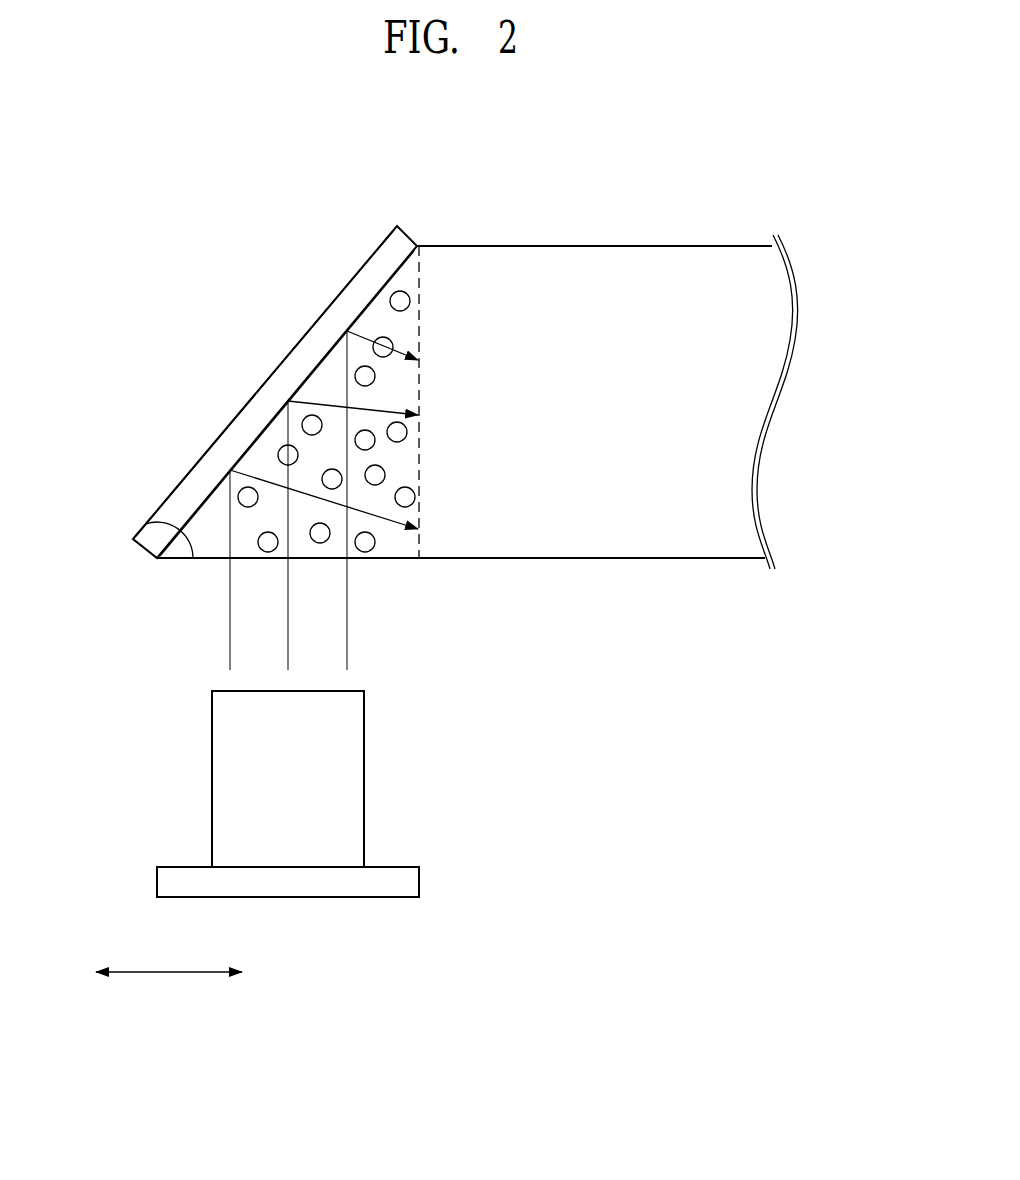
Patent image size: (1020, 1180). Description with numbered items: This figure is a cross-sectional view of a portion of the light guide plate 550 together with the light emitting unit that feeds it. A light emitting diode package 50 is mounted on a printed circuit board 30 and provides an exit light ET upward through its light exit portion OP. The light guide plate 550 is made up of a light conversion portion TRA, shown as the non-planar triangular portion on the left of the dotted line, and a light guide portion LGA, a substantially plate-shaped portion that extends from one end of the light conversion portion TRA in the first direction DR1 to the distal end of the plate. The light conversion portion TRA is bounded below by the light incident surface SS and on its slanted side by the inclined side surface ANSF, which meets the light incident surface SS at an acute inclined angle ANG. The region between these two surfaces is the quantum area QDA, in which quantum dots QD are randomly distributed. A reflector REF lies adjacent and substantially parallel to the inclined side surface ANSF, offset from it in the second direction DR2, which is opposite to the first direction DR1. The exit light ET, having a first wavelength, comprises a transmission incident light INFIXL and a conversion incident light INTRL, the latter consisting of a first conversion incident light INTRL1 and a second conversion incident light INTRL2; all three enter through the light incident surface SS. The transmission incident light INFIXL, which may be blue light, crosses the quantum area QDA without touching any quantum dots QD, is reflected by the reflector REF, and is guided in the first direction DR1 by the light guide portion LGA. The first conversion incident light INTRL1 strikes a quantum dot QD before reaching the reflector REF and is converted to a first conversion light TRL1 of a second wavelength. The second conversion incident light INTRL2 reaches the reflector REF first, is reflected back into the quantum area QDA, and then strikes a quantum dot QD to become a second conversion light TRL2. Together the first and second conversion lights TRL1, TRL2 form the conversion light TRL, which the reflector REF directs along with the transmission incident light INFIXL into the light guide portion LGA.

The light guide plate 550 is at (759, 169).
The light conversion portion TRA is at (326, 236).
The light guide portion LGA is at (647, 231).
The inclined side surface ANSF is at (382, 290).
The reflector REF is at (318, 343).
The quantum area QDA is at (394, 330).
The quantum dots QD is at (398, 497).
The conversion light TRL is at (505, 355).
The first conversion light TRL1 is at (388, 399).
The second conversion light TRL2 is at (403, 358).
The inclined angle ANG is at (146, 522).
The light incident surface SS is at (178, 559).
The exit light ET is at (545, 590).
The conversion incident light INTRL is at (455, 580).
The first conversion incident light INTRL1 is at (288, 609).
The second conversion incident light INTRL2 is at (347, 587).
The transmission incident light INFIXL is at (230, 637).
The light exit portion OP is at (222, 690).
The light emitting diode package 50 is at (340, 777).
The printed circuit board 30 is at (415, 880).
The first direction DR1 is at (223, 971).
The second direction DR2 is at (115, 971).